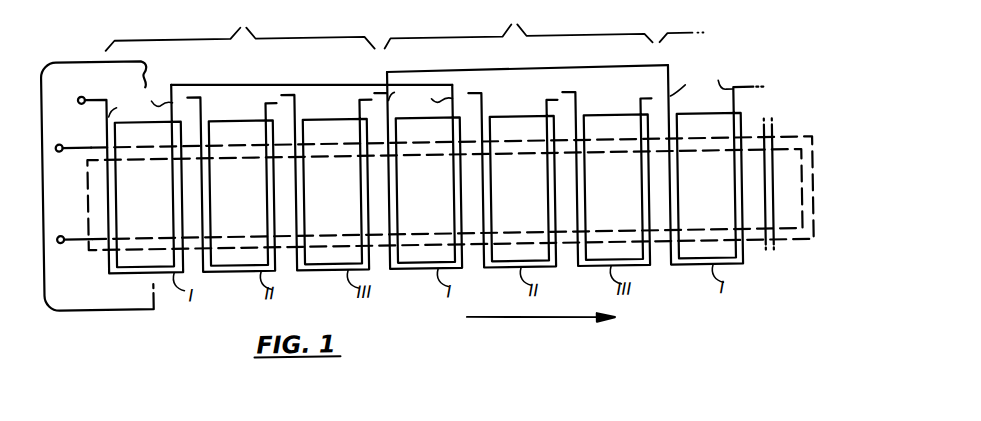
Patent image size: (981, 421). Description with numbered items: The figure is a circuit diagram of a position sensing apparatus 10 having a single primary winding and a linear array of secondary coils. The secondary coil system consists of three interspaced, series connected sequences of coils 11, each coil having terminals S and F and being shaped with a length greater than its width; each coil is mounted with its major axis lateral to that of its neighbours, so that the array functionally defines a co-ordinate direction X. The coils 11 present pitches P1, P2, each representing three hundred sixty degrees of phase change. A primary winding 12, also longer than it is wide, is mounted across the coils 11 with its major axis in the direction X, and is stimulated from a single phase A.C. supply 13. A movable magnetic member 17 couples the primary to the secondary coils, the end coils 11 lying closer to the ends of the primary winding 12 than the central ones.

The position sensing apparatus 10 is at (113, 310).
The coils 11 is at (120, 205).
The primary winding 12 is at (97, 250).
The single phase A.C. supply 13 is at (61, 152).
The movable member 17 is at (766, 188).
The pitch P1 is at (240, 28).
The pitch P2 is at (544, 24).
The co-ordinate direction X is at (530, 322).